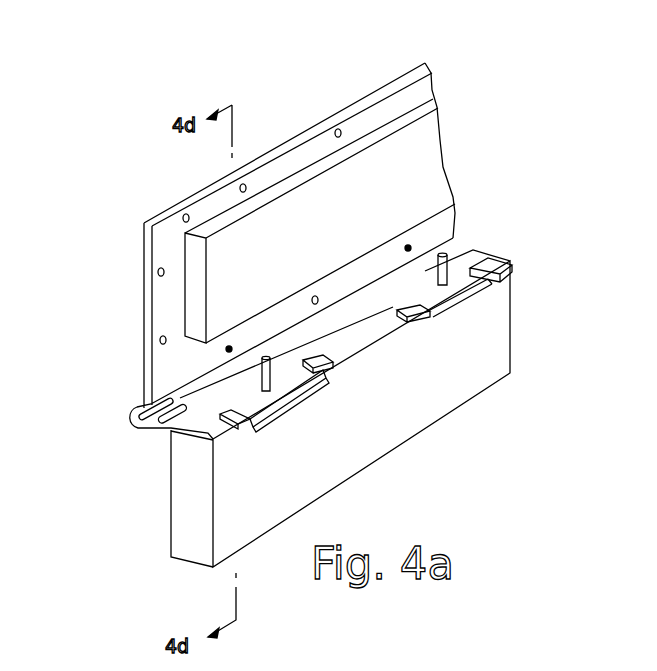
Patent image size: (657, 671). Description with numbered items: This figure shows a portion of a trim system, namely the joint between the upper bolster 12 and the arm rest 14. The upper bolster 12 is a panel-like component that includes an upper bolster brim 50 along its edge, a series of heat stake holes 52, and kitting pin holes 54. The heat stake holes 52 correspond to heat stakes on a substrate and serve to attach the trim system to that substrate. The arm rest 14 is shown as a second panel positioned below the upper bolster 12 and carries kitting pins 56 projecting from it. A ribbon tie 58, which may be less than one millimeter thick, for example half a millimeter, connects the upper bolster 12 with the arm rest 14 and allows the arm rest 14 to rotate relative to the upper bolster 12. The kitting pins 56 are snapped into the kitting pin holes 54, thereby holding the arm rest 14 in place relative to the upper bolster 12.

The upper bolster 12 is at (372, 160).
The arm rest 14 is at (465, 353).
The upper bolster brim 50 is at (313, 143).
The heat stake holes 52 is at (183, 215).
The kitting pin holes 54 is at (411, 246).
The kitting pins 56 is at (450, 251).
The ribbon tie 58 is at (132, 428).